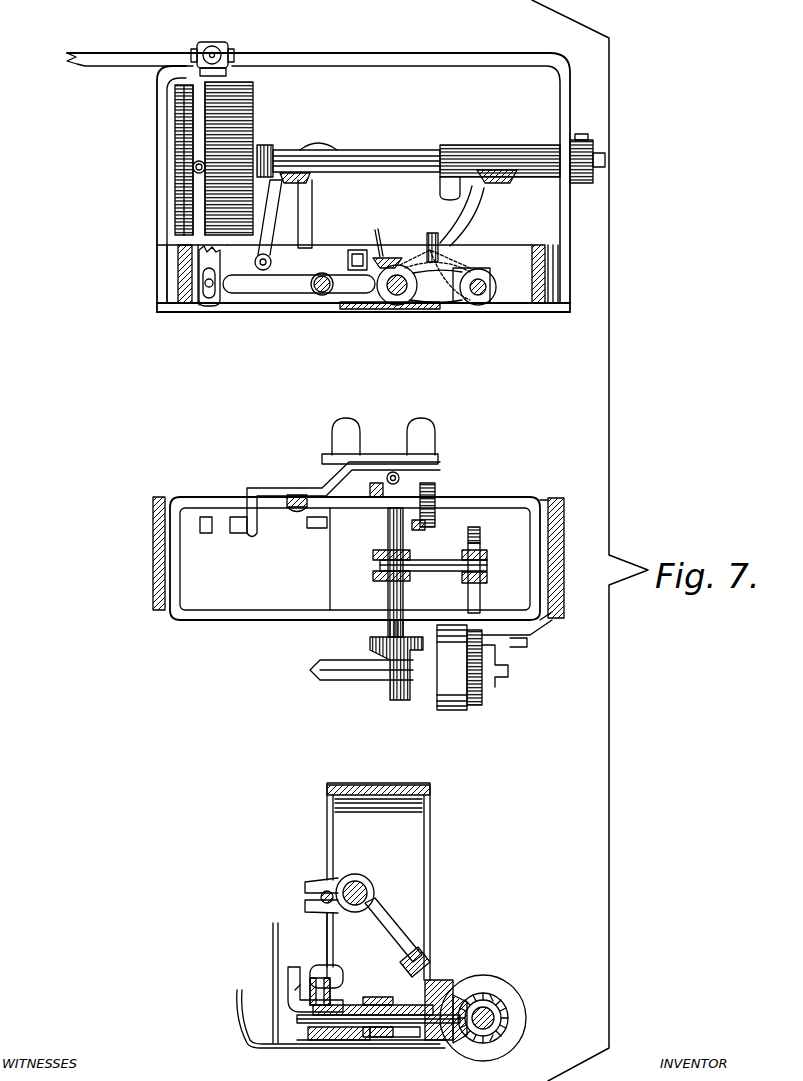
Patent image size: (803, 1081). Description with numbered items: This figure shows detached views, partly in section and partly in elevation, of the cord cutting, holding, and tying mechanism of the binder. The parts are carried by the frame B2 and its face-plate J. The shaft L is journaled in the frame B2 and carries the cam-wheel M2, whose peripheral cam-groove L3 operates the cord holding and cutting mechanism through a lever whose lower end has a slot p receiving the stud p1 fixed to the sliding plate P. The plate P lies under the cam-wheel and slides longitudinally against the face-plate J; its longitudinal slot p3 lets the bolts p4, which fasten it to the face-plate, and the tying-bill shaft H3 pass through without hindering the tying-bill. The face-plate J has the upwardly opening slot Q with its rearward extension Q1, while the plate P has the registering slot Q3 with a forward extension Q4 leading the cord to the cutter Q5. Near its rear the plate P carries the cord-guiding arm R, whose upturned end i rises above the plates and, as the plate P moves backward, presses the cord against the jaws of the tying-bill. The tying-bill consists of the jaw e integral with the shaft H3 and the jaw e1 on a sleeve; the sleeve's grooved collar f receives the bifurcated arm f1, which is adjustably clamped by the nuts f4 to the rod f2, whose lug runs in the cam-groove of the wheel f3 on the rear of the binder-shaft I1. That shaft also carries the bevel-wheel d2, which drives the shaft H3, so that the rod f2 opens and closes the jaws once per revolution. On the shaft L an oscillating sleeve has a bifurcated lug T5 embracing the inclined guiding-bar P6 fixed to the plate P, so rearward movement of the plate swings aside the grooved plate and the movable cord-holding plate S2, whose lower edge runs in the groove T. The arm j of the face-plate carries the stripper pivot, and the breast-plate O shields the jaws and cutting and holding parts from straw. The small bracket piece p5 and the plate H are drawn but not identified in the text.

The frame B2 is at (348, 57).
The cam-wheel M2 is at (252, 120).
The cam-groove L3 is at (178, 98).
The shaft L is at (400, 160).
The bifurcated lug T5 is at (442, 180).
The guiding-bar P6 is at (484, 206).
The face-plate J is at (478, 258).
The cord-guiding arm R is at (282, 190).
The forward extension Q4 is at (357, 250).
The upwardly-projecting end i is at (376, 238).
The slot Q3 is at (386, 258).
The cutter Q5 is at (348, 259).
The rearward extension Q1 is at (377, 277).
The stud p1 is at (206, 298).
The slot p is at (214, 300).
The sliding plate P is at (291, 285).
The longitudinal slot p3 is at (319, 296).
The bolts p4 is at (345, 298).
The horizontal shaft H3 is at (397, 296).
The arm f1 is at (450, 310).
The nuts f4 is at (498, 300).
The bracket p5 is at (310, 180).
The outwardly-extending arm j is at (313, 197).
The breast-plate O is at (410, 432).
The open slot Q is at (436, 488).
The grooved collar f is at (372, 562).
The plate H is at (388, 597).
The rod f2 is at (483, 590).
The bevel-wheel d2 is at (397, 690).
The binder-shaft I1 is at (366, 672).
The cam-wheel f3 is at (445, 682).
The movable cord-holding plate S2 is at (425, 962).
The groove T is at (402, 950).
The jaw e is at (276, 985).
The jaw e1 is at (298, 986).